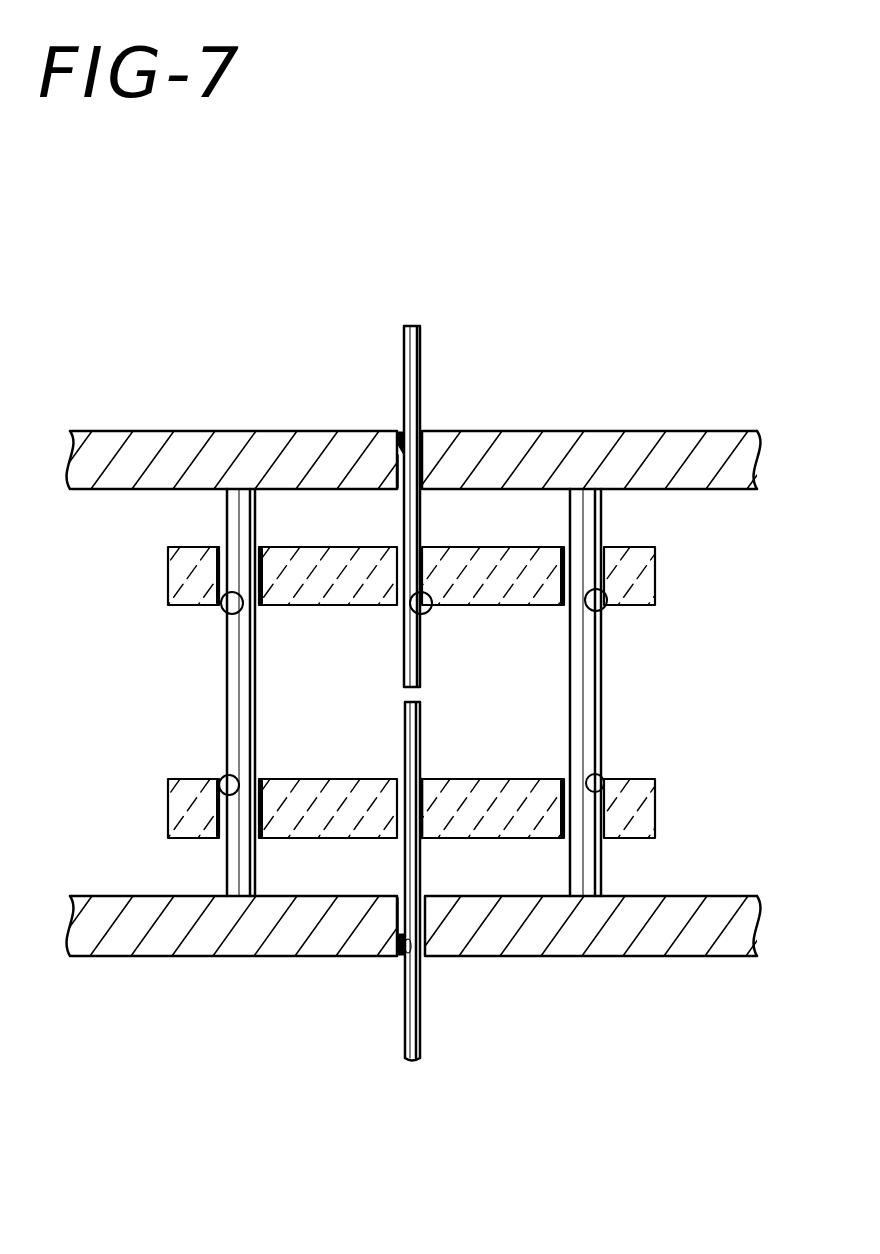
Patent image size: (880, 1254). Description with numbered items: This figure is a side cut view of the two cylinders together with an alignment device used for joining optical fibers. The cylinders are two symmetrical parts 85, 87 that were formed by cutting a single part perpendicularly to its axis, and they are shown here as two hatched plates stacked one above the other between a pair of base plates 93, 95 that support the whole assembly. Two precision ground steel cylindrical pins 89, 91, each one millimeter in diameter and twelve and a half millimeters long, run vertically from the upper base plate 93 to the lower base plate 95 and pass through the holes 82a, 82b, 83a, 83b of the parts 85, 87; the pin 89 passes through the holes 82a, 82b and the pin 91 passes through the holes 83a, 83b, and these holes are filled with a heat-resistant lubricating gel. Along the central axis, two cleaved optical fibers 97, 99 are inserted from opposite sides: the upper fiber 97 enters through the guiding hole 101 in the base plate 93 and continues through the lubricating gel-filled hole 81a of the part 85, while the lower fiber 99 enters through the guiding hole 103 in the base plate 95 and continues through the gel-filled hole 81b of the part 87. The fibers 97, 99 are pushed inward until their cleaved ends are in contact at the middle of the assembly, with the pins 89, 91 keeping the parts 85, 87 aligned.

The base plate 93 is at (722, 430).
The base plate 95 is at (140, 958).
The symmetrical part 85 is at (168, 575).
The symmetrical part 87 is at (657, 822).
The precision ground steel cylindrical pin 89 is at (228, 505).
The precision ground steel cylindrical pin 91 is at (592, 508).
The cleaved optical fiber 97 is at (421, 355).
The cleaved optical fiber 99 is at (420, 1015).
The guiding hole 101 is at (400, 433).
The guiding hole 103 is at (410, 958).
The lubricating gel-filled hole 81a is at (430, 612).
The lubricating gel-filled hole 81b is at (422, 777).
The hole 82a is at (222, 610).
The hole 82b is at (226, 778).
The hole 83a is at (603, 612).
The hole 83b is at (600, 775).